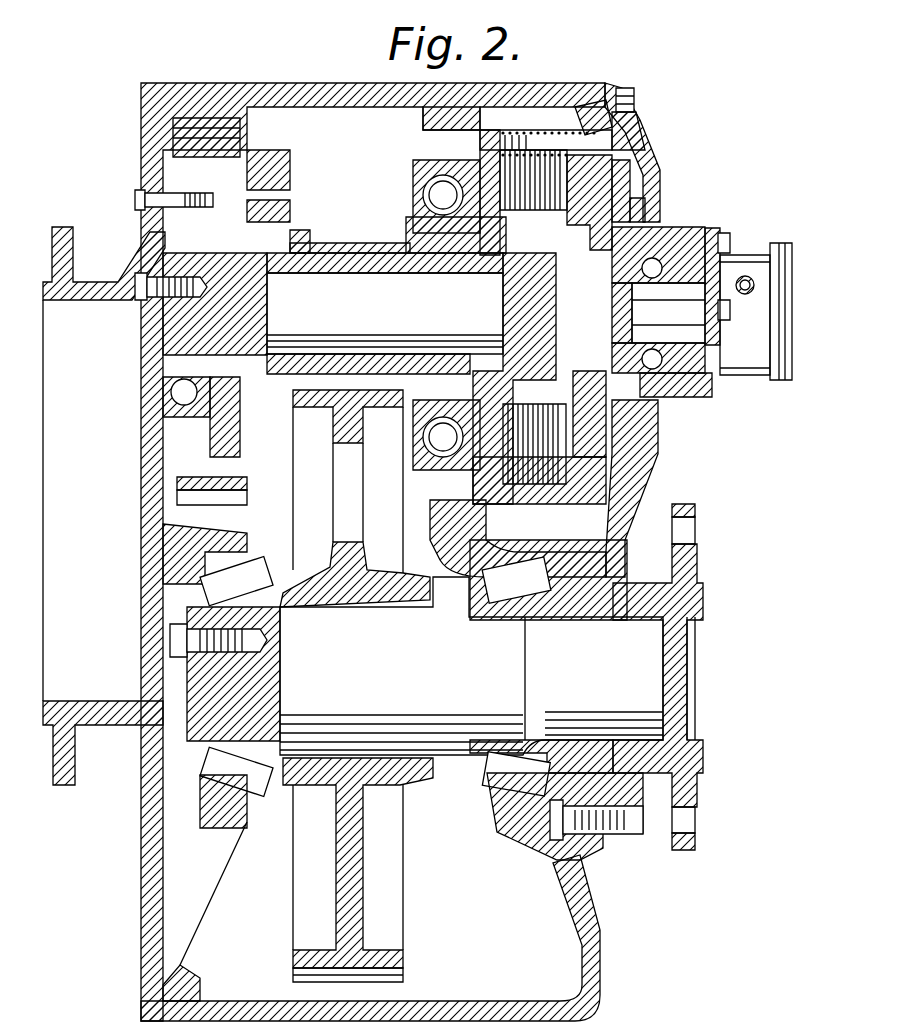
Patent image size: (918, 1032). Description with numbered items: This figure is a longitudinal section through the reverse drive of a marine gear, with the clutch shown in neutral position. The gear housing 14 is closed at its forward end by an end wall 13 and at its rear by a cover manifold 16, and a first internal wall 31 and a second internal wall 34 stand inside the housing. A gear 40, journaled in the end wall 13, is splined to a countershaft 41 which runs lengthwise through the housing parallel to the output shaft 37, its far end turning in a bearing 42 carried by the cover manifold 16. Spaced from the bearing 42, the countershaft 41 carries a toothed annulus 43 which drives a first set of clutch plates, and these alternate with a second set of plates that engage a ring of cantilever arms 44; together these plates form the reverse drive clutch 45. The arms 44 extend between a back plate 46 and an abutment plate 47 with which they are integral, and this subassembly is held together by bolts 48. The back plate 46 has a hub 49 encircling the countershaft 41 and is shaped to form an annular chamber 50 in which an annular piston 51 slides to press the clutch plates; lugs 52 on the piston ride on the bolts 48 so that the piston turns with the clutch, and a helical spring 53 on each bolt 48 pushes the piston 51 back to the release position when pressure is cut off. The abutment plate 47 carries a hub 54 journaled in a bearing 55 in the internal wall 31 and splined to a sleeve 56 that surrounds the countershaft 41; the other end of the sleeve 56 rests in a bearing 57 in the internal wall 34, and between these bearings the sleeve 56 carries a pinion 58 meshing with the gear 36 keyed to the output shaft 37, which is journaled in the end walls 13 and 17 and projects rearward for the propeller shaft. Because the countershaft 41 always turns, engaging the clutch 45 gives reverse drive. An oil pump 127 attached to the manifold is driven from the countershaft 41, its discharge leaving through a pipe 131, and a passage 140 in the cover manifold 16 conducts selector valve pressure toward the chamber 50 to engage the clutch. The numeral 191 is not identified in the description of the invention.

The end wall 13 is at (139, 141).
The gear housing 14 is at (240, 78).
The cover manifold 16 is at (660, 182).
The end wall 17 is at (604, 860).
The first internal wall 31 is at (421, 115).
The second internal wall 34 is at (262, 131).
The gear 36 is at (345, 452).
The output shaft 37 is at (378, 644).
The gear 40 is at (197, 118).
The countershaft 41 is at (355, 309).
The bearing 42 is at (690, 400).
The annulus 43 is at (511, 298).
The cantilever arms 44 is at (616, 487).
The reverse drive clutch 45 is at (567, 446).
The back plate 46 is at (640, 166).
The abutment plate 47 is at (486, 140).
The bolts 48 is at (635, 133).
The hub 49 is at (626, 247).
The annular chamber 50 is at (648, 206).
The annular piston 51 is at (589, 202).
The lugs 52 is at (592, 97).
The helical spring 53 is at (546, 130).
The hub 54 is at (456, 235).
The bearing 55 is at (416, 192).
The sleeve 56 is at (382, 276).
The bearing 57 is at (300, 244).
The pinion 58 is at (361, 244).
The oil pump 127 is at (736, 257).
The pipe 131 is at (768, 290).
The passage 140 is at (711, 230).
The shaft extension 191 is at (720, 335).